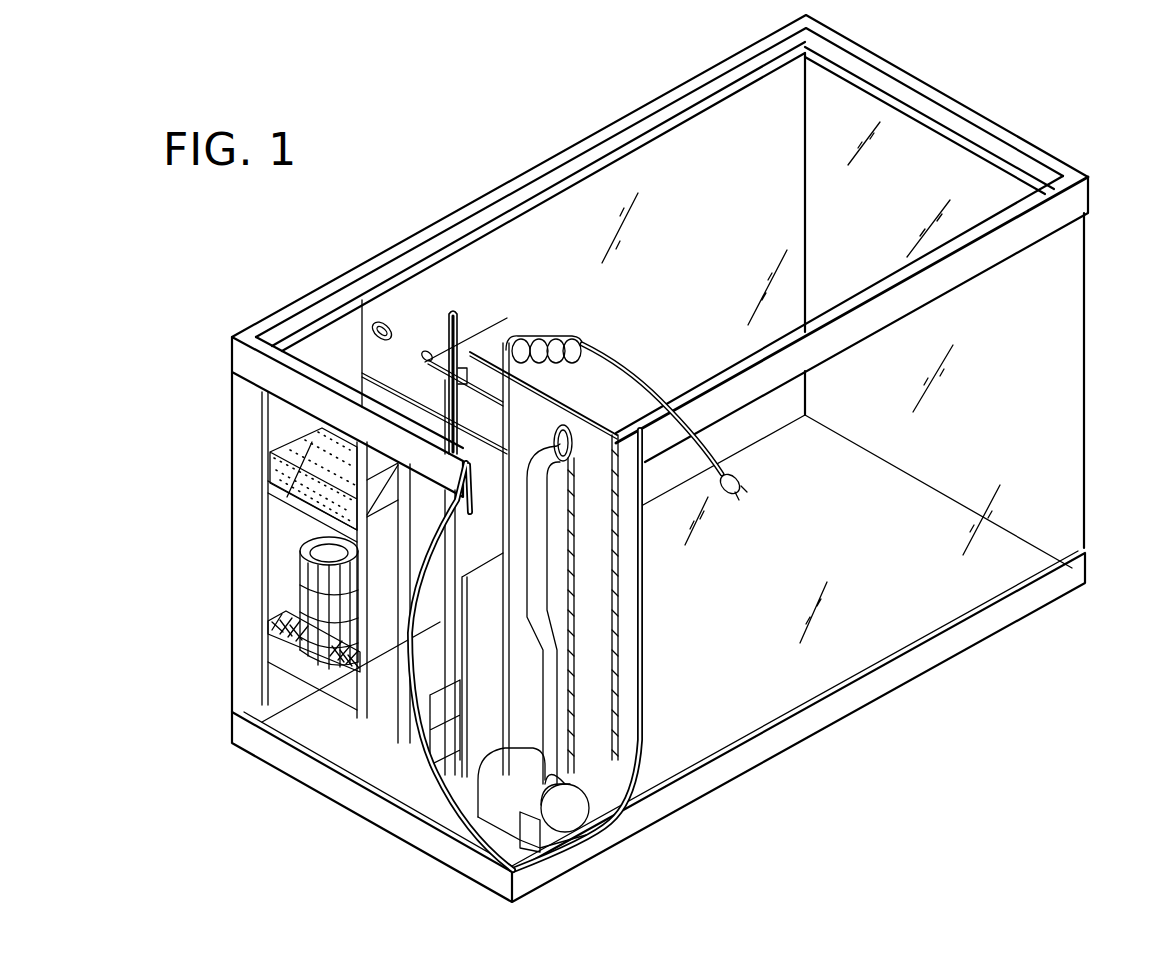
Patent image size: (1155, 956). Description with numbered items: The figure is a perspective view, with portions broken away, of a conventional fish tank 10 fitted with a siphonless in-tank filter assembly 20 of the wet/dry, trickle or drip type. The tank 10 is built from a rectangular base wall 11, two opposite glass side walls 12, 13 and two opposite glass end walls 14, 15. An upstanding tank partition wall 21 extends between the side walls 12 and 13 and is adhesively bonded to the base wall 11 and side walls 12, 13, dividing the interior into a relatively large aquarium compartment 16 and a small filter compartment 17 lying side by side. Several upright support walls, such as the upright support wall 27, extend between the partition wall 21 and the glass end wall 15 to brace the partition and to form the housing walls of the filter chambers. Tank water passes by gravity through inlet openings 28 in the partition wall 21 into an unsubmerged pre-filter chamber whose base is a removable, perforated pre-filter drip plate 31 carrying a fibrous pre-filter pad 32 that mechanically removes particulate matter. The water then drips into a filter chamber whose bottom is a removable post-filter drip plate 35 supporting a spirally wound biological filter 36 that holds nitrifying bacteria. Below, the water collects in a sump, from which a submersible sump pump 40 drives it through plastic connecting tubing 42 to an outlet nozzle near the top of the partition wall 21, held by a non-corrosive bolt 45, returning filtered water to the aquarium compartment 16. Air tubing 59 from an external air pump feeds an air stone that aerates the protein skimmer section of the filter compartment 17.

The fish tank 10 is at (880, 738).
The base wall 11 is at (632, 740).
The glass side wall 12 is at (648, 148).
The glass side wall 13 is at (1082, 388).
The glass end wall 14 is at (970, 163).
The glass end wall 15 is at (340, 760).
The aquarium compartment 16 is at (612, 212).
The filter compartment 17 is at (325, 354).
The in-tank filter assembly 20 is at (544, 385).
The tank partition wall 21 is at (482, 370).
The upright support wall 27 is at (622, 800).
The inlet opening 28 is at (390, 322).
The pre-filter drip plate 31 is at (292, 492).
The pre-filter pad 32 is at (277, 490).
The post-filter drip plate 35 is at (278, 647).
The biological filter 36 is at (312, 602).
The sump pump 40 is at (501, 767).
The connecting tubing 42 is at (548, 692).
The bolt 45 is at (596, 427).
The air tubing 59 is at (460, 312).